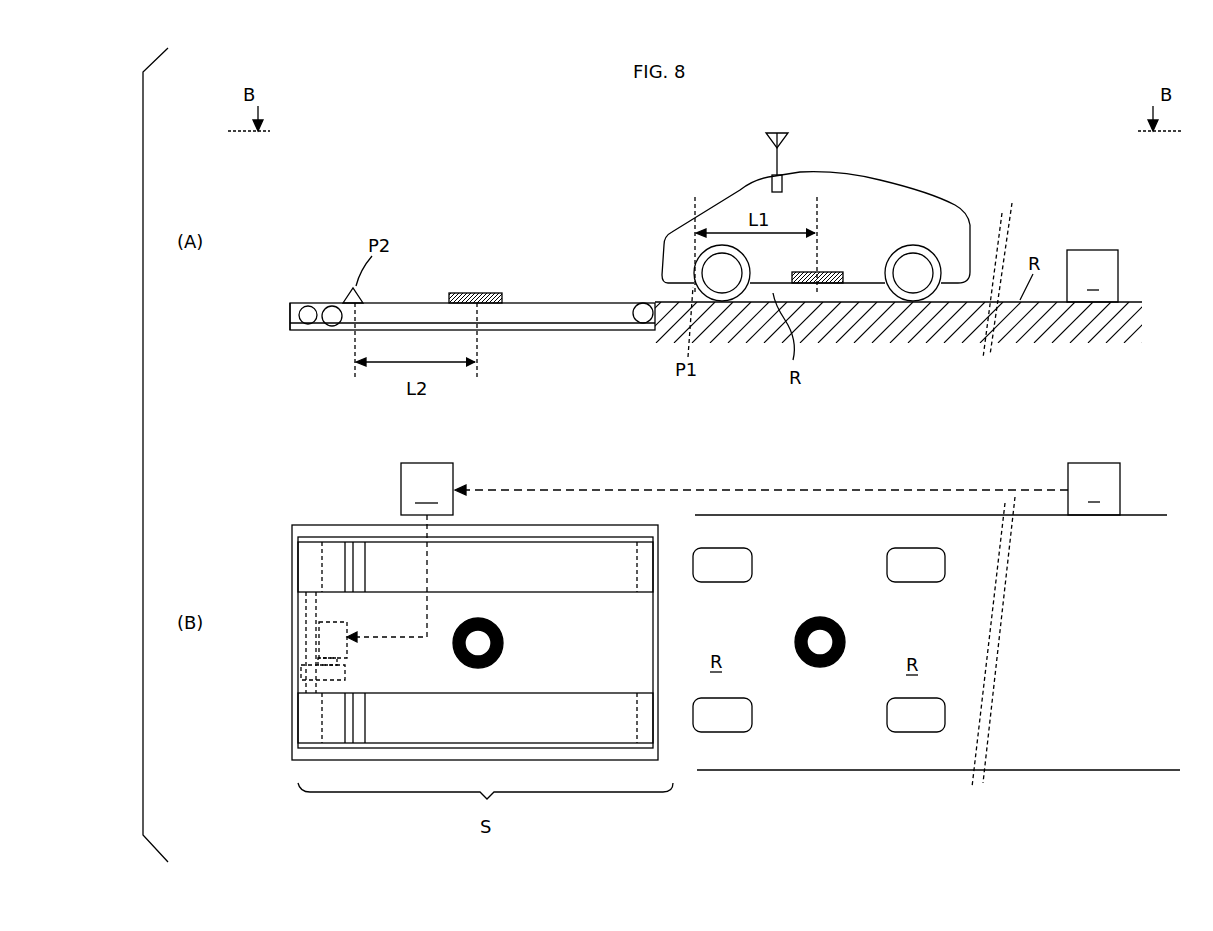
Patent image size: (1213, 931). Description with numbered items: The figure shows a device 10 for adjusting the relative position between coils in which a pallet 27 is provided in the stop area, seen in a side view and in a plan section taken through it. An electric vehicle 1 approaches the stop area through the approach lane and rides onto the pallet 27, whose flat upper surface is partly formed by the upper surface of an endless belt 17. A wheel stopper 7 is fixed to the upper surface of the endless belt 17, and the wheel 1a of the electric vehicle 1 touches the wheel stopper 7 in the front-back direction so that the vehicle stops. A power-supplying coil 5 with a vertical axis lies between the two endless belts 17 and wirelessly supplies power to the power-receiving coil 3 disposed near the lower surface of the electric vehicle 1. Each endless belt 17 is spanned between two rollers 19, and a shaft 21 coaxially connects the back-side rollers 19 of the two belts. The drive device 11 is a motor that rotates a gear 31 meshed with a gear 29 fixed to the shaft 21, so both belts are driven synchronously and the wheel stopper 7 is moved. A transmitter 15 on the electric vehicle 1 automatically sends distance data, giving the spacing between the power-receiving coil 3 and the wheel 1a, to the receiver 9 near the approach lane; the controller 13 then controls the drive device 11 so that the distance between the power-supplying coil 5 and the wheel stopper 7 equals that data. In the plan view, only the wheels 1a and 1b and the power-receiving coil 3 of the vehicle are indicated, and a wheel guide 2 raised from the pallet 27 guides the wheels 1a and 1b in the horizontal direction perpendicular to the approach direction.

The electric vehicle 1 is at (887, 172).
The wheel 1a is at (737, 243).
The wheel 1b is at (942, 257).
The wheel guide 2 is at (553, 532).
The power-receiving coil 3 is at (822, 272).
The power-supplying coil 5 is at (500, 303).
The wheel stopper 7 is at (345, 300).
The receiver 9 is at (1093, 382).
The device for adjusting relative position between coils 10 is at (358, 142).
The drive device 11 is at (325, 639).
The controller 13 is at (707, 552).
The transmitter 15 is at (786, 134).
The endless belt 17 is at (533, 322).
The roller 19 is at (297, 318).
The shaft 21 is at (306, 613).
The pallet 27 is at (290, 314).
The gear 29 is at (303, 678).
The gear 31 is at (328, 310).